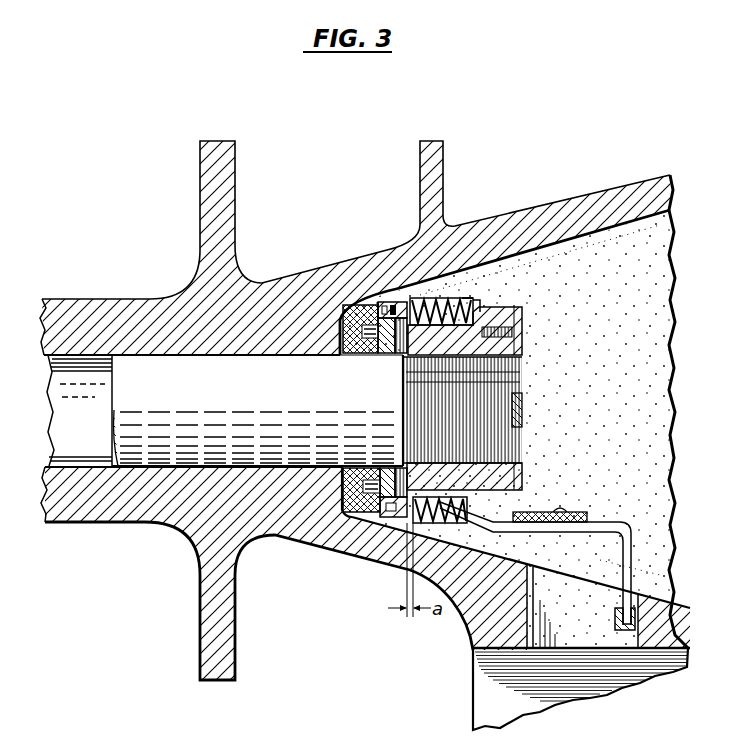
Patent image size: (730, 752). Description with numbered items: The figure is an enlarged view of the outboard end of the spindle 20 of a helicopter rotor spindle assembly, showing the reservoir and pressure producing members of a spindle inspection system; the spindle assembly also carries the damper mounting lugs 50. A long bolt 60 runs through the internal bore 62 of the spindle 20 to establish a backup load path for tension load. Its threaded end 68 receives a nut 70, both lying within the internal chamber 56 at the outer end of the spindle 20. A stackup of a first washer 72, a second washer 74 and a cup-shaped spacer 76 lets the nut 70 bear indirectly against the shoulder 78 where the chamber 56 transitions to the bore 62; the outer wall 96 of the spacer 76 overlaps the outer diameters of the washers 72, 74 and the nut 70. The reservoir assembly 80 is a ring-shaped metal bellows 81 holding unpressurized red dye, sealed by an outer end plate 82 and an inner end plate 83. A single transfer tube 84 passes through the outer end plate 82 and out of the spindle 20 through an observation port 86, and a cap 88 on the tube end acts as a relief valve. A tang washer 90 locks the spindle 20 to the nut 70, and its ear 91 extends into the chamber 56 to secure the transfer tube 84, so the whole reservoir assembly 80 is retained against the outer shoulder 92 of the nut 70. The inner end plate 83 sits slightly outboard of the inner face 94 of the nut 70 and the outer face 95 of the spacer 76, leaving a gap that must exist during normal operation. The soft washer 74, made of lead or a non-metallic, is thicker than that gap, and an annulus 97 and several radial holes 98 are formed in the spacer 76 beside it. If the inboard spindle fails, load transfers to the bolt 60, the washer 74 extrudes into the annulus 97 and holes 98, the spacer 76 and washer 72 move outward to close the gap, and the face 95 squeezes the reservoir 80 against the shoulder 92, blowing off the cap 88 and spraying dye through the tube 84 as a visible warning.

The spindle shaft 20 is at (92, 297).
The damper mounting lugs 50 is at (478, 714).
The internal chamber 56 is at (656, 234).
The long bolt 60 is at (157, 392).
The internal bore 62 is at (62, 382).
The threaded end 68 is at (523, 373).
The nut 70 is at (506, 308).
The first washer 72 is at (398, 464).
The second washer 74 is at (368, 508).
The spacer 76 is at (350, 515).
The shoulder 78 is at (347, 352).
The reservoir assembly 80 is at (463, 528).
The metal bellows 81 is at (438, 300).
The outer end plate 82 is at (476, 305).
The inner end plate 83 is at (406, 308).
The transfer tube 84 is at (632, 567).
The observation port 86 is at (540, 648).
The cap 88 is at (616, 627).
The tang washer 90 is at (523, 409).
The ear 91 is at (590, 514).
The outer shoulder 92 is at (468, 297).
The inner face 94 is at (401, 354).
The outer face 95 is at (397, 306).
The outer wall 96 is at (390, 304).
The annulus 97 is at (380, 352).
The radial holes 98 is at (383, 301).